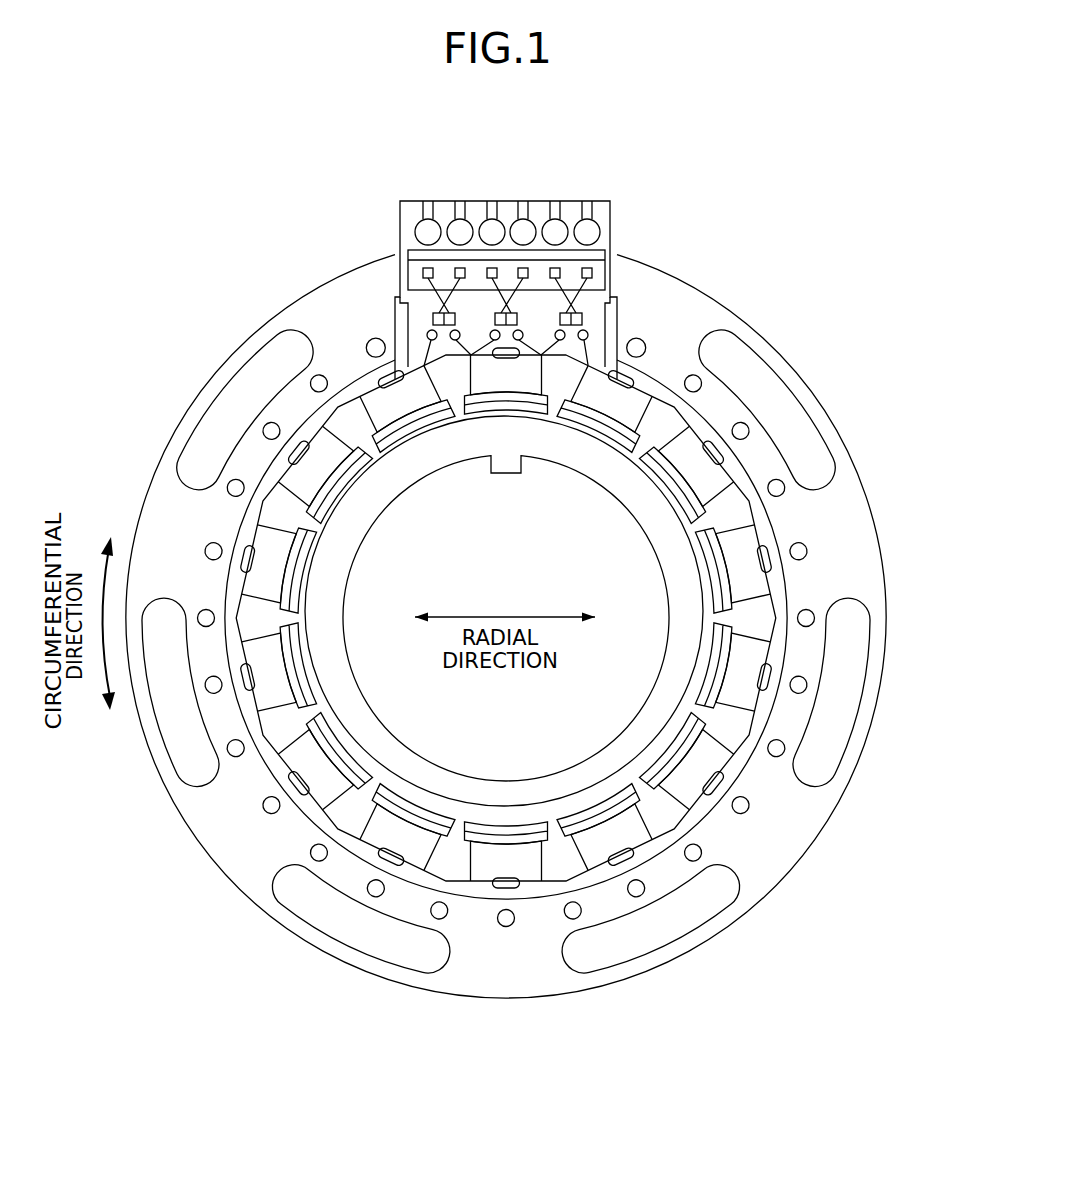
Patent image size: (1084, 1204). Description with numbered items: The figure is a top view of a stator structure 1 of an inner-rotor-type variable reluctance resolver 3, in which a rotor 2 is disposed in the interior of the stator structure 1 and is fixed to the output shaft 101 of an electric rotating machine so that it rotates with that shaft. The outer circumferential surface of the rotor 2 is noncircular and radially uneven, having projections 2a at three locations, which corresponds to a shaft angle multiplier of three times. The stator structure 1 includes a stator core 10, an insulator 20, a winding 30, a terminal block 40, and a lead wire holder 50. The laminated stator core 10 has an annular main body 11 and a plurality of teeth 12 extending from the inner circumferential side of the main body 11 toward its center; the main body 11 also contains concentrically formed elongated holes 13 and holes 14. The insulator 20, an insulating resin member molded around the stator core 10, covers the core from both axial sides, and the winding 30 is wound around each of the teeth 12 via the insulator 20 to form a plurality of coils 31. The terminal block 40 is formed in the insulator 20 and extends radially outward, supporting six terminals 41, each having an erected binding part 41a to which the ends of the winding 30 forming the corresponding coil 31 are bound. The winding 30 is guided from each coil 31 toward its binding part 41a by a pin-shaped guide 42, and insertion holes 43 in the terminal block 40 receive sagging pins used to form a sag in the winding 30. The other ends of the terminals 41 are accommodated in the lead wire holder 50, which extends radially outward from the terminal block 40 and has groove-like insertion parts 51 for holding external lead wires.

The stator structure 1 is at (838, 314).
The rotor 2 is at (377, 497).
The projections 2a is at (460, 437).
The resolver 3 is at (840, 240).
The stator core 10 is at (917, 380).
The main body 11 is at (818, 512).
The teeth 12 is at (780, 442).
The elongated holes 13 is at (672, 955).
The holes 14 is at (755, 813).
The insulator 20 is at (732, 768).
The winding 30 is at (645, 347).
The coils 31 is at (740, 583).
The terminal block 40 is at (408, 262).
The terminals 41 is at (584, 308).
The binding part 41a is at (552, 240).
The guide 42 is at (590, 335).
The insertion holes 43 is at (608, 273).
The lead wire holder 50 is at (424, 198).
The insertion parts 51 is at (455, 196).
The output shaft 101 is at (494, 740).